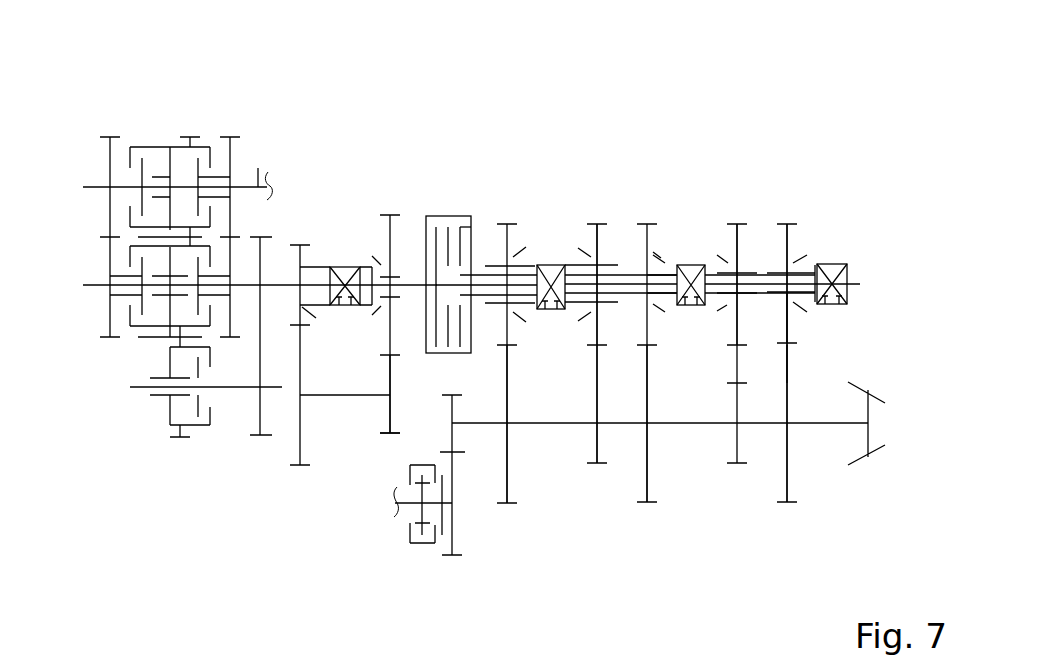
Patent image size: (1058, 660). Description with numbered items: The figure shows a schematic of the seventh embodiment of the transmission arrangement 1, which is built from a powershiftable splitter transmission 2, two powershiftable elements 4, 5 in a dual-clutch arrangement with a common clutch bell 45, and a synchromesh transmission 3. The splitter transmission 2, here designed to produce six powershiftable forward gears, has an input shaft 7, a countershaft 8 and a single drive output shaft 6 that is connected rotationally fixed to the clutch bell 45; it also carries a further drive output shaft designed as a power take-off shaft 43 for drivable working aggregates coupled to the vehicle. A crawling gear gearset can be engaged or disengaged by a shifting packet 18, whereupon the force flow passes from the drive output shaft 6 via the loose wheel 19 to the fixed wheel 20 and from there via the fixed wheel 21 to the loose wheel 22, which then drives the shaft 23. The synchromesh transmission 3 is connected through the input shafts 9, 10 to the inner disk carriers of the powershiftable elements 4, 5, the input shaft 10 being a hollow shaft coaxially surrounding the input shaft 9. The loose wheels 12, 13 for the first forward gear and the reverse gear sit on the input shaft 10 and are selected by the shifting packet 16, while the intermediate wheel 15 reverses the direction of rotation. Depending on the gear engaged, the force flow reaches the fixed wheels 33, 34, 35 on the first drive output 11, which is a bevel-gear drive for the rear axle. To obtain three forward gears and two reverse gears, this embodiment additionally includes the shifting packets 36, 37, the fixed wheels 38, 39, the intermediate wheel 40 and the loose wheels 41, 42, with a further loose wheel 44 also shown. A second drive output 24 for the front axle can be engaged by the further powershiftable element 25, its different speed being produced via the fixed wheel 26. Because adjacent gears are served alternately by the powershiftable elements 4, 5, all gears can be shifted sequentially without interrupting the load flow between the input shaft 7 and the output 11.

The transmission arrangement 1 is at (752, 152).
The splitter transmission 2 is at (175, 447).
The synchromesh transmission 3 is at (702, 517).
The powershiftable element 4 is at (430, 357).
The powershiftable element 5 is at (462, 355).
The drive output shaft 6 is at (291, 244).
The input shaft 7 is at (95, 286).
The countershaft 8 is at (95, 187).
The input shaft 9 is at (782, 318).
The input shaft 10 is at (508, 224).
The first drive output 11 is at (813, 421).
The loose wheel 12 is at (553, 262).
The loose wheel 13 is at (649, 222).
The intermediate wheel 15 is at (603, 380).
The shifting packet 16 is at (599, 242).
The shifting packet 18 is at (344, 263).
The loose wheel 19 is at (320, 240).
The fixed wheel 20 is at (297, 448).
The fixed wheel 21 is at (388, 415).
The loose wheel 22 is at (372, 250).
The shaft 23 is at (406, 268).
The second drive output 24 is at (395, 505).
The powershiftable element 25 is at (428, 555).
The fixed wheel 26 is at (460, 445).
The fixed wheel 33 is at (512, 467).
The fixed wheel 34 is at (648, 463).
The fixed wheel 35 is at (597, 445).
The shifting packet 36 is at (692, 261).
The shifting packet 37 is at (839, 258).
The fixed wheel 38 is at (740, 445).
The fixed wheel 39 is at (787, 463).
The intermediate wheel 40 is at (740, 357).
The loose wheel 41 is at (792, 249).
The loose wheel 42 is at (744, 247).
The power take-off shaft 43 is at (258, 168).
The loose wheel 44 is at (652, 246).
The clutch bell 45 is at (475, 250).